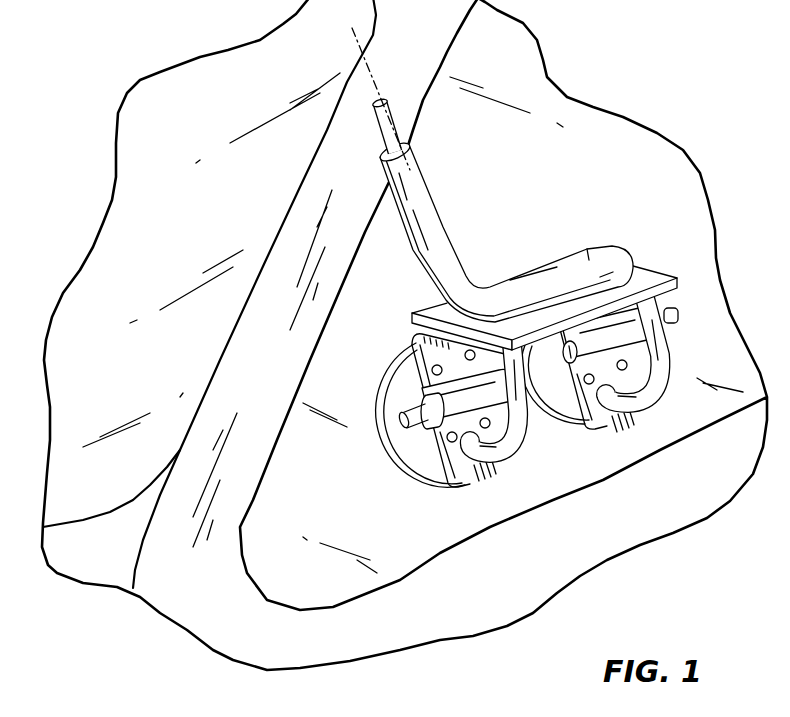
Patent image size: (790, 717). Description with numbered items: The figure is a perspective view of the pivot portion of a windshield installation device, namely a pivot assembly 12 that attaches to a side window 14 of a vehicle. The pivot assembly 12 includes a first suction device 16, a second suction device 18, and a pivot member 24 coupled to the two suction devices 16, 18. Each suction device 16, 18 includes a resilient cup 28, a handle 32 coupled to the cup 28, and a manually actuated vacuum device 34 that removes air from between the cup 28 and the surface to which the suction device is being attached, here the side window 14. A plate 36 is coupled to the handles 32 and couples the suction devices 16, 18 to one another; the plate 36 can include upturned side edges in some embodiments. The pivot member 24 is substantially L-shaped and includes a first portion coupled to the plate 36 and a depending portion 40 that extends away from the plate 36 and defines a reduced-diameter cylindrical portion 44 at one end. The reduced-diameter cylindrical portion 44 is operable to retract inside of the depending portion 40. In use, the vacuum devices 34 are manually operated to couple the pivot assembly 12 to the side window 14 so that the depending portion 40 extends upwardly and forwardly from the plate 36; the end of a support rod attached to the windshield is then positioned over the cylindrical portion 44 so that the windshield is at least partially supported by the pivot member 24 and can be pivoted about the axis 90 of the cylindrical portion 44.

The pivot assembly 12 is at (600, 197).
The side window 14 is at (538, 160).
The first suction device 16 is at (455, 470).
The second suction device 18 is at (597, 416).
The pivot member 24 is at (587, 276).
The resilient cup 28 is at (392, 405).
The handle 32 is at (479, 452).
The manually actuated vacuum device 34 is at (422, 404).
The plate 36 is at (651, 267).
The depending portion 40 is at (428, 222).
The reduced-diameter cylindrical portion 44 is at (392, 114).
The axis 90 is at (373, 83).